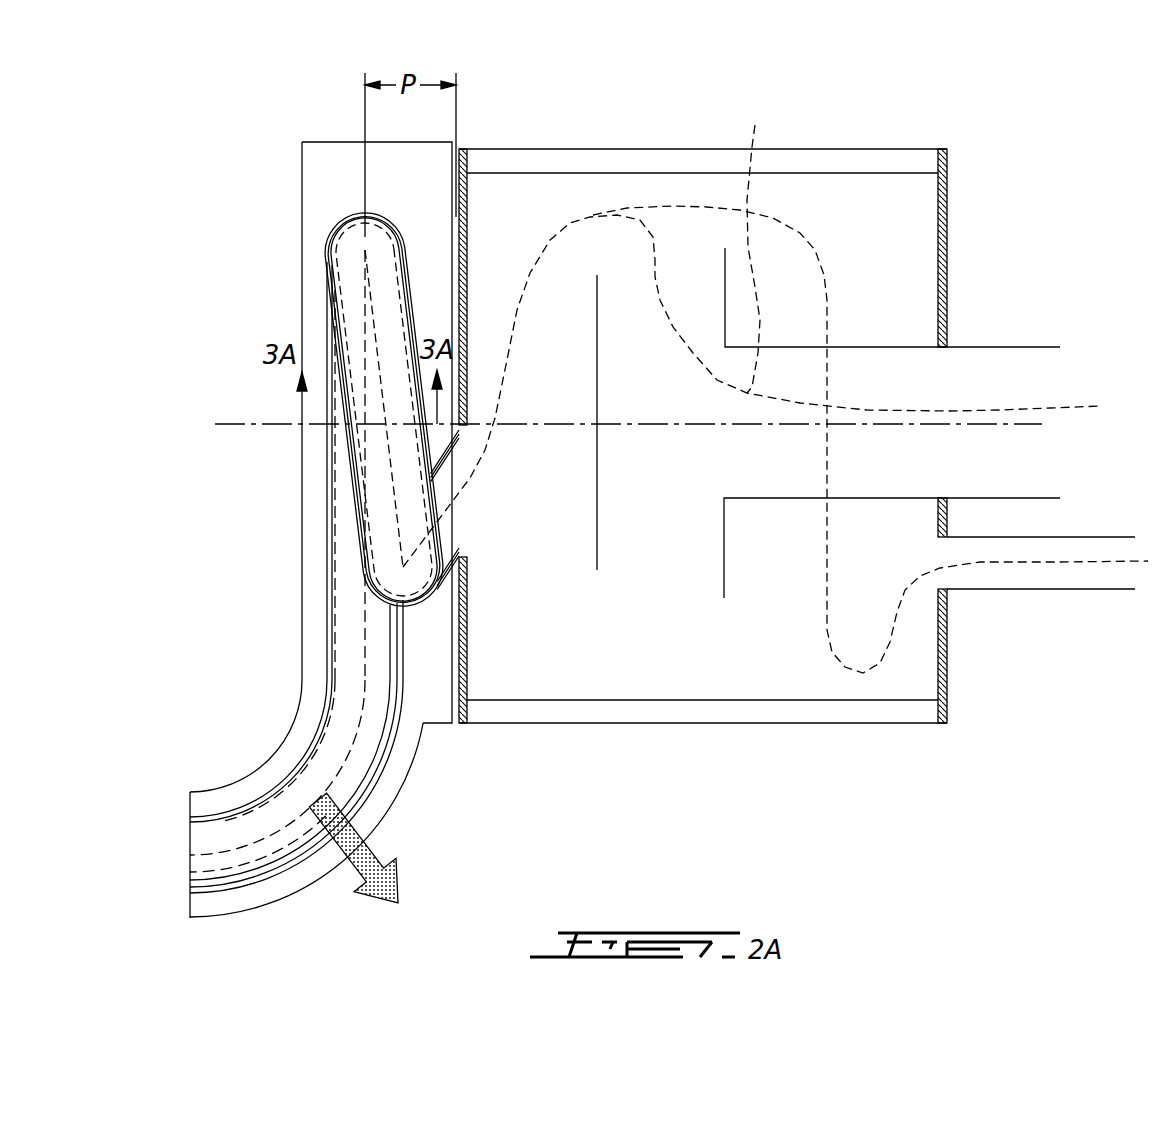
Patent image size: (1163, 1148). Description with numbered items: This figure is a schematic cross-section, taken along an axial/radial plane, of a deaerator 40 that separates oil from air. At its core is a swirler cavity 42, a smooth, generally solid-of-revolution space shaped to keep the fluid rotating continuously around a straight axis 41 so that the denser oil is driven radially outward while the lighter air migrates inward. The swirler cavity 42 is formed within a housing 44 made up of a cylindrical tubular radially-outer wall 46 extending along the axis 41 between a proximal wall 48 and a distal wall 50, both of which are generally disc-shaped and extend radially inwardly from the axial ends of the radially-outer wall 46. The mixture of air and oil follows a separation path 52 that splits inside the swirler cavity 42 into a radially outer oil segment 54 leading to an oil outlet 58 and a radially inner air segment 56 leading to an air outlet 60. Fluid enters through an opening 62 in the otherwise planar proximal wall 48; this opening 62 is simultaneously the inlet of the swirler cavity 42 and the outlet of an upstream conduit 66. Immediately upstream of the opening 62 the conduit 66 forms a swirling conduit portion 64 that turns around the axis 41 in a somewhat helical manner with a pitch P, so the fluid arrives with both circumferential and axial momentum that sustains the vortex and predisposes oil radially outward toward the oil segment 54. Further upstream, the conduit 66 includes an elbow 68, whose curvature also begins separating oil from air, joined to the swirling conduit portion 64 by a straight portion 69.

The deaerator 40 is at (975, 105).
The axis 41 is at (243, 422).
The swirler cavity 42 is at (583, 261).
The housing 44 is at (960, 300).
The radially-outer wall 46 is at (838, 148).
The proximal wall 48 is at (463, 208).
The distal wall 50 is at (947, 173).
The separation path 52 is at (752, 330).
The oil segment 54 is at (870, 383).
The air segment 56 is at (759, 243).
The oil outlet 58 is at (1100, 590).
The air outlet 60 is at (1025, 347).
The opening 62 is at (468, 527).
The swirling conduit portion 64 is at (339, 267).
The conduit 66 is at (315, 572).
The elbow 68 is at (337, 777).
The straight portion 69 is at (348, 660).